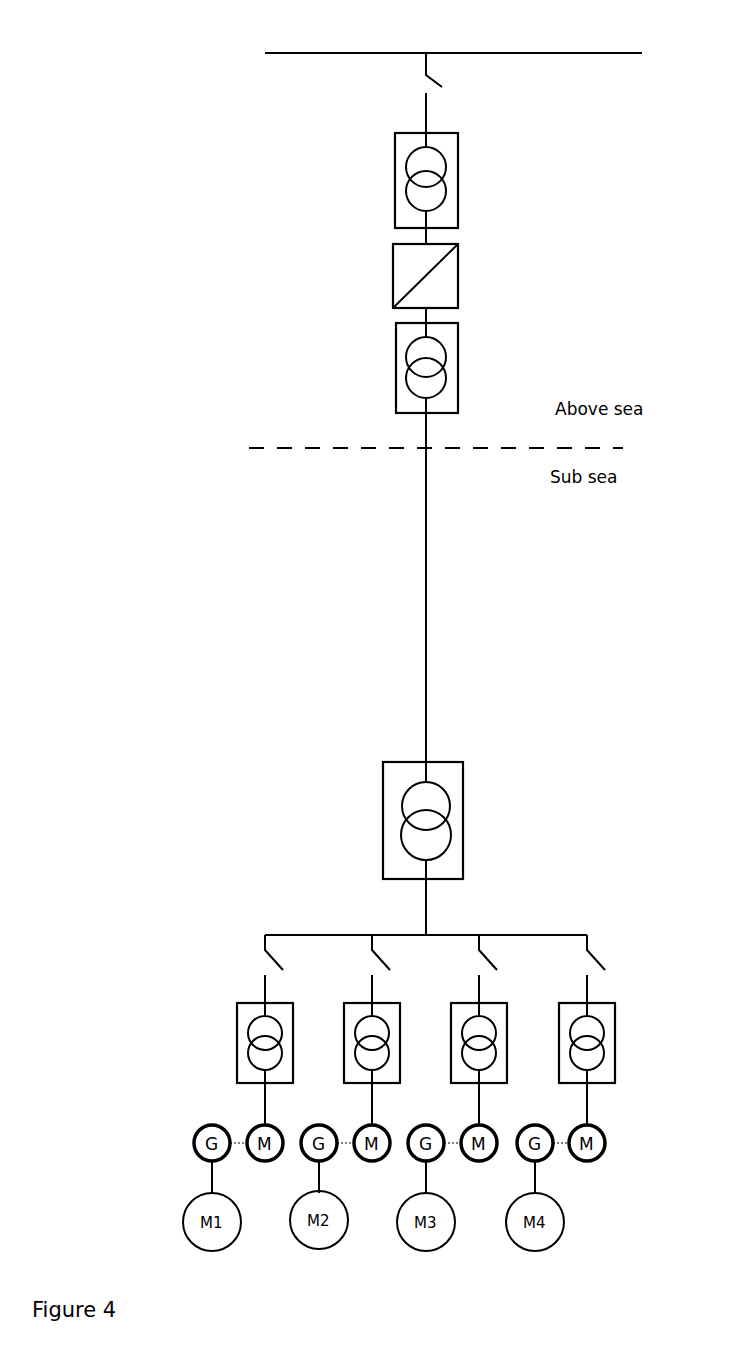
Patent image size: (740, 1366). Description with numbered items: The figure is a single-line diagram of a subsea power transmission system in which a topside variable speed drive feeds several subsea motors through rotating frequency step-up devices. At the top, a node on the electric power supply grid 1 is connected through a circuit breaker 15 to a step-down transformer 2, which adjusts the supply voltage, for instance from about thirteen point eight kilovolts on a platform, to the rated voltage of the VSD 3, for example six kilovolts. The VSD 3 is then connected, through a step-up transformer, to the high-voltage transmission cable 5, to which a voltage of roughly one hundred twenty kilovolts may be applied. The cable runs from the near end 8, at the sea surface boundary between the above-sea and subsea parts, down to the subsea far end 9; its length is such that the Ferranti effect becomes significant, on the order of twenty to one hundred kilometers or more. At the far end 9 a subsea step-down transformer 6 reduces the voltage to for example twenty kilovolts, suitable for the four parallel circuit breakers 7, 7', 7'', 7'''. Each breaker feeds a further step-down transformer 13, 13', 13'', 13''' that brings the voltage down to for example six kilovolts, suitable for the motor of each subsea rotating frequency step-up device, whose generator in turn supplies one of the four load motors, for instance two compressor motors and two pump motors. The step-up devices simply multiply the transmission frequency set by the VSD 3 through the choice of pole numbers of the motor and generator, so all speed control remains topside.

The electric power supply grid 1 is at (312, 42).
The circuit breaker 15 is at (445, 86).
The step-down transformer 2 is at (376, 185).
The variable speed drive 3 is at (468, 272).
The near end of transmission cable 8 is at (420, 445).
The transmission cable 5 is at (411, 556).
The far end of transmission cable 9 is at (416, 758).
The step-down transformer 6 is at (373, 805).
The circuit breaker 7 is at (289, 952).
The circuit breaker 7' is at (399, 952).
The circuit breaker 7'' is at (507, 952).
The circuit breaker 7''' is at (617, 952).
The step-down transformer 13 is at (239, 1043).
The step-down transformer 13' is at (355, 1043).
The step-down transformer 13'' is at (461, 1043).
The step-down transformer 13''' is at (568, 1043).